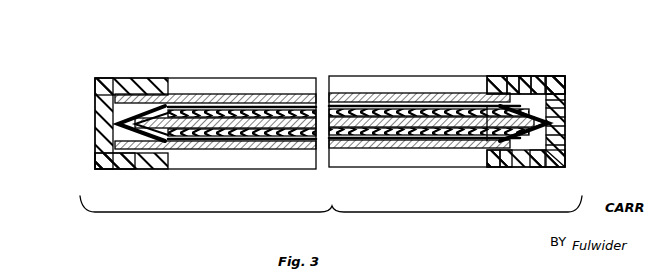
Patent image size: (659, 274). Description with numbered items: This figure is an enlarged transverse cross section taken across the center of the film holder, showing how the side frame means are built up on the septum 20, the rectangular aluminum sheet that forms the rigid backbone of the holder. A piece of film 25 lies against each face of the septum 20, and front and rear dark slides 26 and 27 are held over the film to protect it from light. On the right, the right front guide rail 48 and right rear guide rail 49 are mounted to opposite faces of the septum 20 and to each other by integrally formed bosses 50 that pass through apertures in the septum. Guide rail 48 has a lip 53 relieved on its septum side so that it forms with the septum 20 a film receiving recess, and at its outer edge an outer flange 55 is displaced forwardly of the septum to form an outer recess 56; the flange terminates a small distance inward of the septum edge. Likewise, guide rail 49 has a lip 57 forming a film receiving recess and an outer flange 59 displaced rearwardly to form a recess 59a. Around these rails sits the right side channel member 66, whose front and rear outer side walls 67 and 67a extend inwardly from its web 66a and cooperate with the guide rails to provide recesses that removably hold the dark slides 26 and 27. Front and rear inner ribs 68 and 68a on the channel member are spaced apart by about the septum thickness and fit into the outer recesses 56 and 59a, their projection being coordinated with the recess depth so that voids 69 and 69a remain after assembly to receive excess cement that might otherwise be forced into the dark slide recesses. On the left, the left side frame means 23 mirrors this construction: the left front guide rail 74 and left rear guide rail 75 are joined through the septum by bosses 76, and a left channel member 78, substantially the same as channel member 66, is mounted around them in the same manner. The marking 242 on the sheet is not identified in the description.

The sectional cable assembly 242 is at (88, 141).
The rear dark slide 27 is at (318, 100).
The integrally formed bosses 76 is at (180, 95).
The left rear guide rail 75 is at (150, 80).
The septum 20 is at (255, 112).
The film 25 is at (280, 118).
The front dark slide 26 is at (290, 150).
The left front guide rail 74 is at (135, 169).
The left channel member 78 is at (100, 160).
The right front guide rail 48 is at (522, 167).
The lip 57 is at (497, 76).
The rear outer side wall 67a is at (513, 76).
The right rear guide rail 49 is at (524, 76).
The outer flange 59 is at (538, 76).
The void 69a is at (560, 76).
The recess 59a is at (565, 94).
The rear inner rib 68a is at (566, 100).
The left side frame means 23 is at (583, 107).
The outer recess 56 is at (566, 118).
The web 66a is at (566, 127).
The front inner rib 68 is at (566, 136).
The right side channel member 66 is at (566, 146).
The void 69 is at (566, 165).
The outer flange 55 is at (538, 167).
The front outer side wall 67 is at (504, 167).
The integrally formed bosses 50 is at (492, 167).
The lip 53 is at (478, 167).